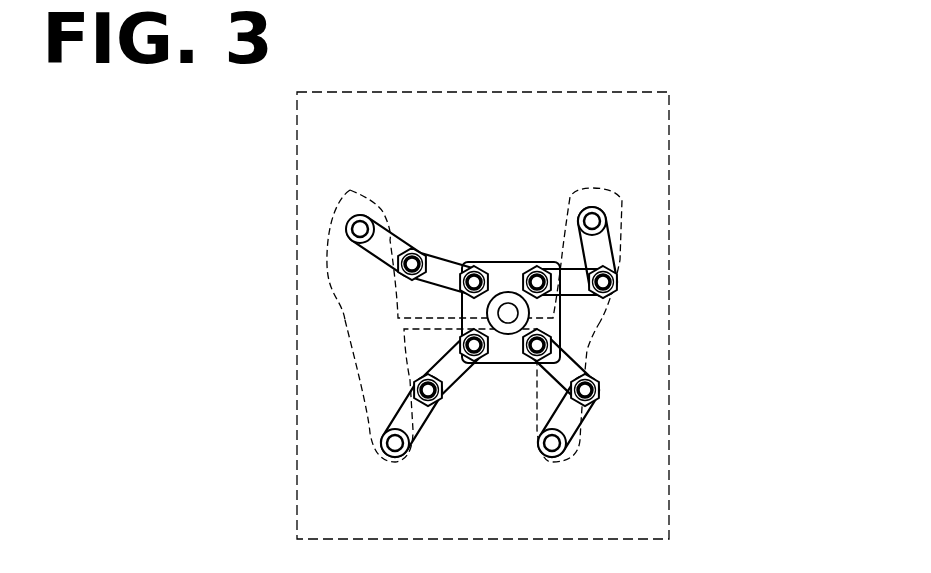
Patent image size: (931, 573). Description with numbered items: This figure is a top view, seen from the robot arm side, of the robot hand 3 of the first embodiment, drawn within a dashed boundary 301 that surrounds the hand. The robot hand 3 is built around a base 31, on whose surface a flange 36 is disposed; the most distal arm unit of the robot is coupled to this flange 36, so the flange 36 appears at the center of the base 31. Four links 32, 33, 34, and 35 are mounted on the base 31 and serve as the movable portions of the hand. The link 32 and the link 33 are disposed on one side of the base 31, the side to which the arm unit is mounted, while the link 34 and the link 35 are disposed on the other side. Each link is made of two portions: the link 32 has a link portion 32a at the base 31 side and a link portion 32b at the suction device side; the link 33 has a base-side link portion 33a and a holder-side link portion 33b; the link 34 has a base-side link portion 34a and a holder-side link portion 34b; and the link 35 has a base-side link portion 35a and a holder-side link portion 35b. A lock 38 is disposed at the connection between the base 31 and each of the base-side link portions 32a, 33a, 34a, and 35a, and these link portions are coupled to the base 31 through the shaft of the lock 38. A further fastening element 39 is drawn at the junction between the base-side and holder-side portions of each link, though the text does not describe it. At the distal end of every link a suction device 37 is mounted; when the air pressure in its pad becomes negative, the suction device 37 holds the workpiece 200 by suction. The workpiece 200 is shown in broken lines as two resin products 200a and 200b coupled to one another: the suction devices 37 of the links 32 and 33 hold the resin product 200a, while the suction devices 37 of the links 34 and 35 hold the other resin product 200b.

The distal end region of manipulator 301 is at (525, 90).
The robot hand 3 is at (642, 211).
The workpiece 200 is at (490, 313).
The resin product 200a is at (333, 225).
The resin product 200b is at (600, 322).
The base 31 is at (520, 262).
The link 32 is at (330, 302).
The link portion 32a is at (436, 280).
The link portion 32b is at (387, 252).
The link 33 is at (315, 402).
The link portion 33a is at (450, 368).
The link portion 33b is at (405, 410).
The link 34 is at (675, 243).
The link portion 34a is at (577, 275).
The link portion 34b is at (602, 240).
The link 35 is at (658, 414).
The link portion 35a is at (584, 407).
The link portion 35b is at (562, 426).
The flange 36 is at (503, 338).
The suction device 37 is at (360, 216).
The lock 38 is at (472, 268).
The intermediate joint nut 39 is at (412, 250).